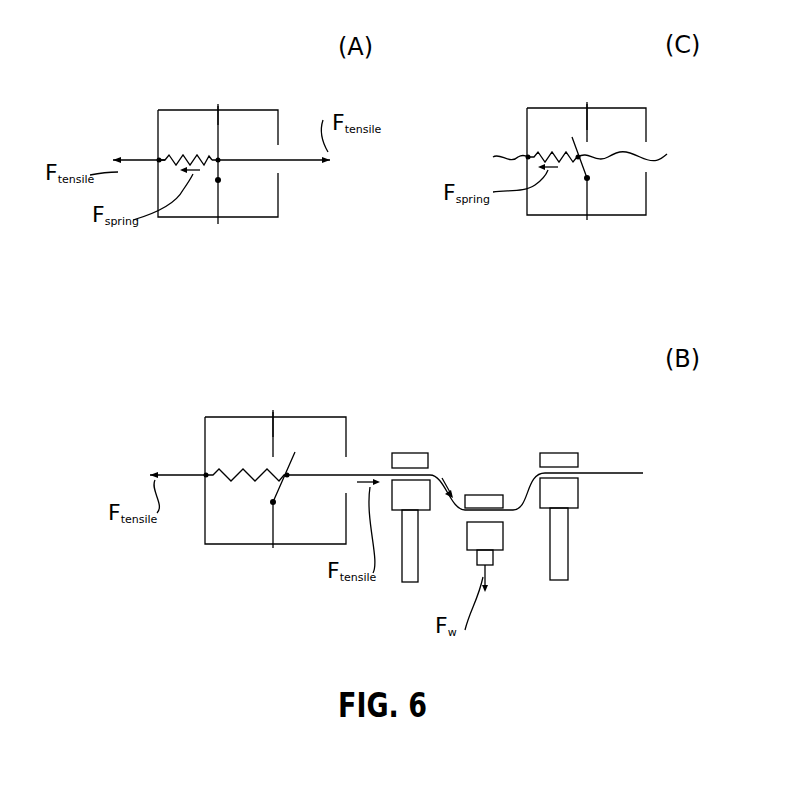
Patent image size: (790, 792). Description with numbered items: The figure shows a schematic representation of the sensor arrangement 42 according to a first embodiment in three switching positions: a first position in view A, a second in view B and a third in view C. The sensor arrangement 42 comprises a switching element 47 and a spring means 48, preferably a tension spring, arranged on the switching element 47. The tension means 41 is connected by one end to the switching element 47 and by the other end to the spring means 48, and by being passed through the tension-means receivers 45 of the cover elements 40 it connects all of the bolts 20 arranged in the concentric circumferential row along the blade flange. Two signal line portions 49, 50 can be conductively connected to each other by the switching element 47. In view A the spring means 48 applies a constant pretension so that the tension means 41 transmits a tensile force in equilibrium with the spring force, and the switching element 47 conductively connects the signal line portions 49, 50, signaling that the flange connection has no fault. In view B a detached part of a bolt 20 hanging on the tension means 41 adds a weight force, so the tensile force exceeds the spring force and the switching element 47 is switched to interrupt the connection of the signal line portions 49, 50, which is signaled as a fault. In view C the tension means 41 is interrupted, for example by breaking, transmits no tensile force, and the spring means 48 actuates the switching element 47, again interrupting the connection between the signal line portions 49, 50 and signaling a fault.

The bolt 20 is at (410, 575).
The cover element 40 is at (413, 462).
The tension means 41 is at (298, 160).
The sensor arrangement 42 is at (150, 127).
The tension-means receiver 45 is at (405, 470).
The switching element 47 is at (222, 146).
The spring means 48 is at (195, 152).
The signal line portion 49 is at (218, 202).
The signal line portion 50 is at (218, 125).